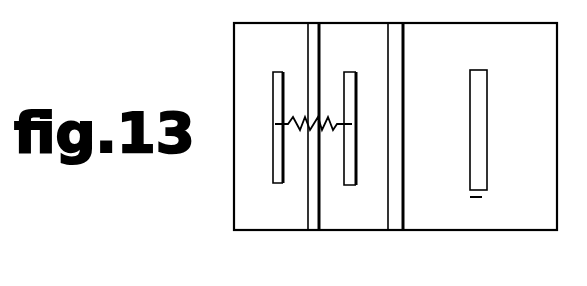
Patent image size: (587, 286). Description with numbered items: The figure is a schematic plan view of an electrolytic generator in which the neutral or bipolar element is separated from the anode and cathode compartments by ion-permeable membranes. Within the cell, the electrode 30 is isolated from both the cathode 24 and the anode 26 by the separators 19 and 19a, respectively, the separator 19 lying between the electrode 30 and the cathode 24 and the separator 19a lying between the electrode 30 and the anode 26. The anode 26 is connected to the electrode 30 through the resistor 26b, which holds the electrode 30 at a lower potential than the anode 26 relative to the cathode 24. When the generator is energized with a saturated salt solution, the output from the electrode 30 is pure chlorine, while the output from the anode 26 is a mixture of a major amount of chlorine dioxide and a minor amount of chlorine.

The separator 19 is at (393, 223).
The separator 19a is at (311, 222).
The cathode 24 is at (487, 133).
The anode 26 is at (280, 74).
The resistor 26b is at (303, 131).
The electrode 30 is at (352, 76).